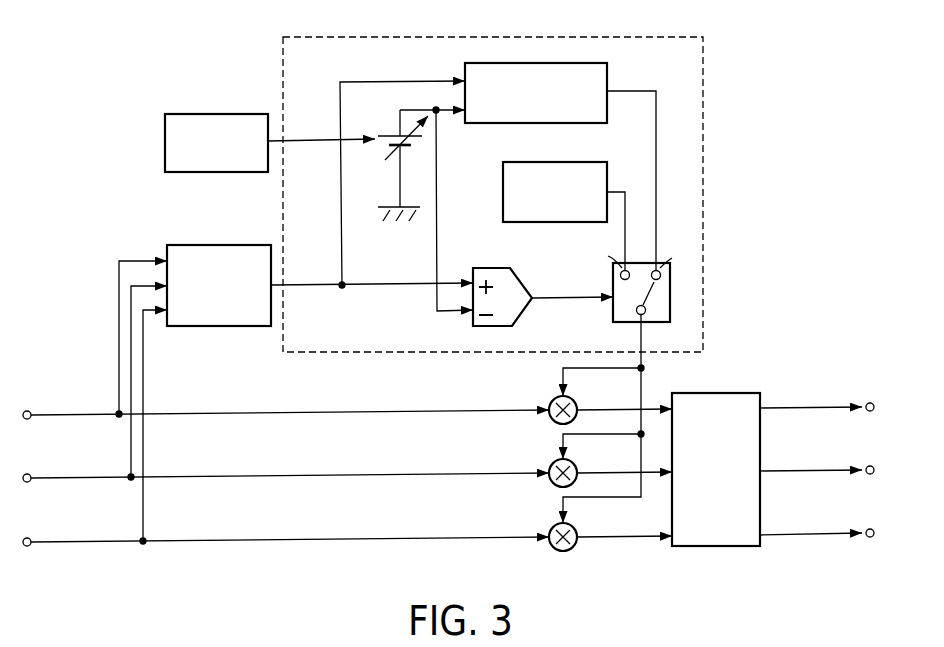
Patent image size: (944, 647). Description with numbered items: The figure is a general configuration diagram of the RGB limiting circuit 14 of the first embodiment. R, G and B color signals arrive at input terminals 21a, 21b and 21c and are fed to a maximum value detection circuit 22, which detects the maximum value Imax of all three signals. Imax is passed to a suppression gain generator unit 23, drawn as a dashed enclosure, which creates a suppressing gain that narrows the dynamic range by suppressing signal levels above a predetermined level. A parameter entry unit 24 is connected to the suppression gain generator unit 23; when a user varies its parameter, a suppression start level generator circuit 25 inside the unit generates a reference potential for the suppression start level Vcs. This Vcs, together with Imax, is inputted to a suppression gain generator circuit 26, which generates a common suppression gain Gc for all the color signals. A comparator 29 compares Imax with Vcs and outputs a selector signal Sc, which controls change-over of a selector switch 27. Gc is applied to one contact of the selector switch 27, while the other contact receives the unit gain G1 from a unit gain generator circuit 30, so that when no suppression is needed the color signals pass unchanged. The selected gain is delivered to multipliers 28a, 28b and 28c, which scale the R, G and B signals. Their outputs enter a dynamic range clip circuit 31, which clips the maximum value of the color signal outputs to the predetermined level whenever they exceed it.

The RGB limiting circuit 14 is at (748, 102).
The input terminal 21a is at (29, 419).
The input terminal 21b is at (29, 482).
The input terminal 21c is at (29, 546).
The maximum value detection circuit 22 is at (248, 245).
The suppression gain generator unit 23 is at (703, 165).
The parameter entry unit 24 is at (246, 113).
The suppression start level generator circuit 25 is at (380, 146).
The suppression gain generator circuit 26 is at (586, 51).
The selector switch 27 is at (613, 317).
The multiplier 28a is at (550, 401).
The multiplier 28b is at (550, 464).
The multiplier 28c is at (550, 528).
The comparator 29 is at (519, 316).
The unit gain generator circuit 30 is at (585, 162).
The dynamic range clip circuit 31 is at (722, 393).